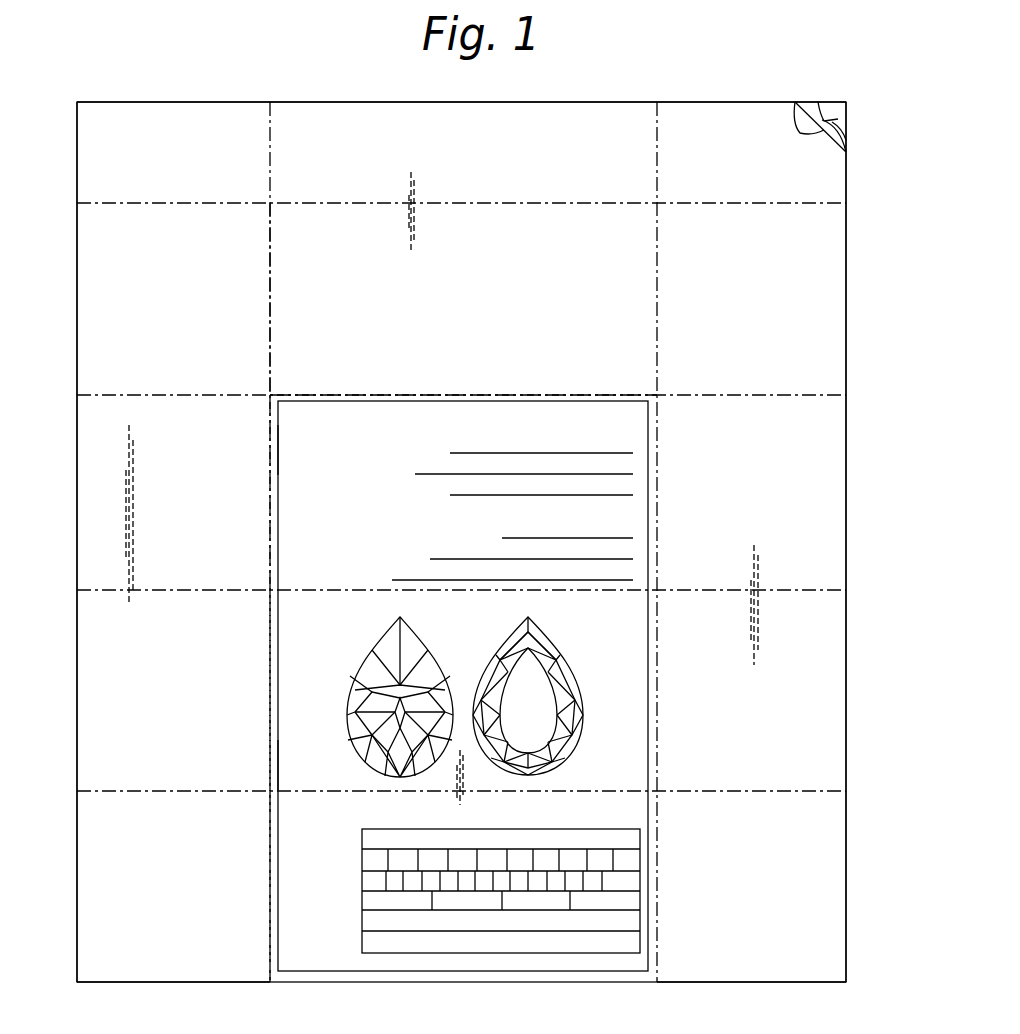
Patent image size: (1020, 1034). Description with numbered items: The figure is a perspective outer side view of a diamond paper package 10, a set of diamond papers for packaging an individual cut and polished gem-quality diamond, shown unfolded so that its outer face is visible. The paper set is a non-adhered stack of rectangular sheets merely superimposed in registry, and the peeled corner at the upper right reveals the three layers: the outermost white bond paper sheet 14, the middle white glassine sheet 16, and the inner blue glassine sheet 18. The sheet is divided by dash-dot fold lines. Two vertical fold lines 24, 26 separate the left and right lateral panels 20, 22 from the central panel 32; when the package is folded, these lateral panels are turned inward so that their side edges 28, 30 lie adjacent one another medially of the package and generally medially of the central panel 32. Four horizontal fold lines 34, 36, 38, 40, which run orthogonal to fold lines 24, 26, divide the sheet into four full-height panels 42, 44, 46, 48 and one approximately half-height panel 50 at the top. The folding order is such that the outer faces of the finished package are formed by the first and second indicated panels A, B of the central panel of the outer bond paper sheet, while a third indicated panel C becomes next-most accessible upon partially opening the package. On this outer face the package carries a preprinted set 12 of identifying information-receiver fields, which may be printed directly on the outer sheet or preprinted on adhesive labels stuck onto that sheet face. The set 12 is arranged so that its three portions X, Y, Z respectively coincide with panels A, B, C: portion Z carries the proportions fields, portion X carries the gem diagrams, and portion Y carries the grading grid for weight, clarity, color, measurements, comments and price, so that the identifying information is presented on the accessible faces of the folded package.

The diamond paper package 10 is at (160, 96).
The preprinted set of identifying information-receiver fields 12 is at (478, 400).
The white bond paper sheet 14 is at (773, 108).
The white glassine sheet 16 is at (804, 106).
The blue glassine sheet 18 is at (843, 104).
The left lateral panel 20 is at (168, 979).
The right lateral panel 22 is at (697, 984).
The fold line 24 is at (270, 695).
The fold line 26 is at (657, 688).
The side edge 28 is at (77, 690).
The side edge 30 is at (846, 700).
The central panel 32 is at (484, 297).
The fold line 34 is at (608, 790).
The fold line 36 is at (611, 593).
The fold line 38 is at (606, 393).
The fold line 40 is at (604, 203).
The full-height panel 42 is at (270, 822).
The full-height panel 44 is at (270, 650).
The full-height panel 46 is at (270, 507).
The full-height panel 48 is at (272, 288).
The half-height panel 50 is at (590, 101).
The first indicated panel A is at (277, 765).
The second indicated panel B is at (277, 875).
The third indicated panel C is at (277, 450).
The portion of the preprinted field set X is at (309, 761).
The portion of the preprinted field set Y is at (309, 832).
The portion of the preprinted field set Z is at (297, 514).